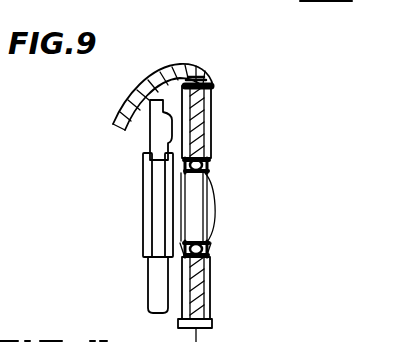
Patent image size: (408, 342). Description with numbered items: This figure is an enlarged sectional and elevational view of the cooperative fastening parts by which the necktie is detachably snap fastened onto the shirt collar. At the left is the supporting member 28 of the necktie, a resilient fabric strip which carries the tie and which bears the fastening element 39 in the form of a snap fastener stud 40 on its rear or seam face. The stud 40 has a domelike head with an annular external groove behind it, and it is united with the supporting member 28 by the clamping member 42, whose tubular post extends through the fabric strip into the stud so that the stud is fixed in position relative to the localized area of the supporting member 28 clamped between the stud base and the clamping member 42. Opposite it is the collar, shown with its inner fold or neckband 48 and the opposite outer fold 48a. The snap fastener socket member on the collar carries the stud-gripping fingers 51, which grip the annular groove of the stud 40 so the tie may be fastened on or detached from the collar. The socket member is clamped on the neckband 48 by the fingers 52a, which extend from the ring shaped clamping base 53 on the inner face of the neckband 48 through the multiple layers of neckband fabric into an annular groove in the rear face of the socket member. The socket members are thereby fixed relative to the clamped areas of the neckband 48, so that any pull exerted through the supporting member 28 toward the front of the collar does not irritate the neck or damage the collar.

The outer fold 48a is at (127, 97).
The neckband 48 is at (211, 122).
The snap fastener stud 40 is at (211, 167).
The fingers 52a is at (211, 215).
The ring shaped clamping base 53 is at (214, 248).
The fastening element 39 is at (150, 164).
The clamping member 42 is at (142, 197).
The stud-gripping fingers 51 is at (165, 242).
The supporting member 28 is at (148, 283).